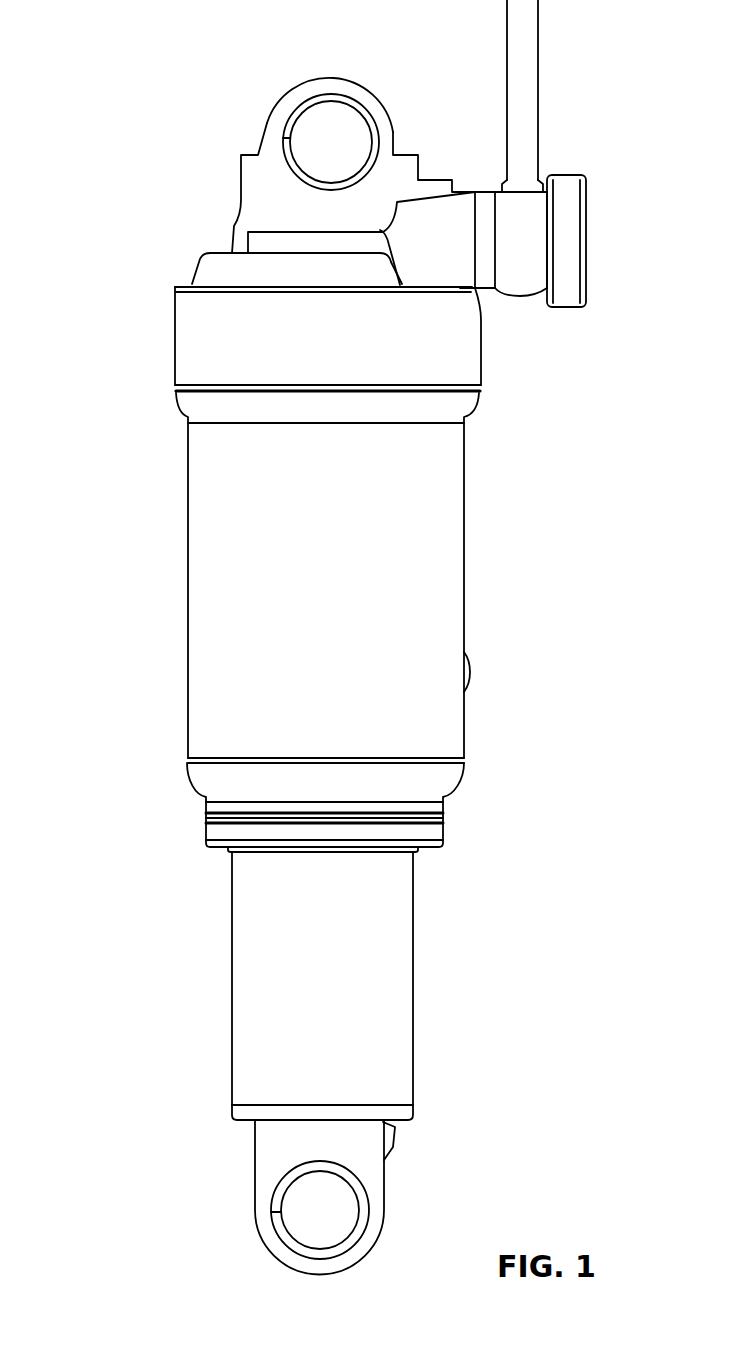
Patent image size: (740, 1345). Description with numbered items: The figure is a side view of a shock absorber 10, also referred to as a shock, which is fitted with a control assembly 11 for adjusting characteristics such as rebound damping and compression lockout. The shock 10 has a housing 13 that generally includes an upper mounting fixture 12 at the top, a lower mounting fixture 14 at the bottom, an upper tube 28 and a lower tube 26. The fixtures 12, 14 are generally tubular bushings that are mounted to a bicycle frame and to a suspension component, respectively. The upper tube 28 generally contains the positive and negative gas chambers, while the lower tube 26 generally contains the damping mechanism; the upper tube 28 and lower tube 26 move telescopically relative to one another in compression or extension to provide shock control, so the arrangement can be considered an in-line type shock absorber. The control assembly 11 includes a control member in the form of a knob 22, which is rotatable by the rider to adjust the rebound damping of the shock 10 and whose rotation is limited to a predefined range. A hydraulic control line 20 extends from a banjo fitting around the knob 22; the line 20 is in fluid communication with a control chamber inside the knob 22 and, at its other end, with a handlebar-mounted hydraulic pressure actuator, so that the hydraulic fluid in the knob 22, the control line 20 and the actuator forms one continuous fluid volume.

The shock absorber 10 is at (578, 540).
The control assembly 11 is at (607, 312).
The upper mounting fixture 12 is at (345, 103).
The housing 13 is at (125, 445).
The lower mounting fixture 14 is at (363, 1223).
The hydraulic control line 20 is at (538, 50).
The knob 22 is at (586, 216).
The lower tube 26 is at (413, 980).
The upper tube 28 is at (464, 727).